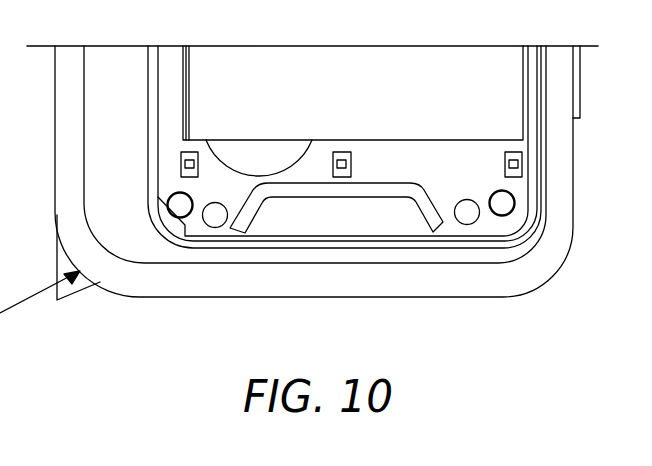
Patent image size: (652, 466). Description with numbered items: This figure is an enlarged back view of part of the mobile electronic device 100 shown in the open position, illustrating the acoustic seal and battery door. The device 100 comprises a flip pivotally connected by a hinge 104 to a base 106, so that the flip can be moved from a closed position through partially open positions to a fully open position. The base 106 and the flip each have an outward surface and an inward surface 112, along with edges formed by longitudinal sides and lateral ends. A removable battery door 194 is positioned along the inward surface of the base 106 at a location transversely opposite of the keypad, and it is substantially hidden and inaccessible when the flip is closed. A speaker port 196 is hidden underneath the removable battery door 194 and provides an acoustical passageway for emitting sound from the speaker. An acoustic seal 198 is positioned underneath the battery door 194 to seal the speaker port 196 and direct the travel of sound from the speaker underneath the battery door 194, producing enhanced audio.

The mobile electronic device 100 is at (566, 269).
The hinge 104 is at (57, 264).
The base 106 is at (173, 298).
The inward surface 112 is at (546, 162).
The removable battery door 194 is at (0, 8).
The speaker port 196 is at (97, 283).
The acoustic seal 198 is at (356, 198).